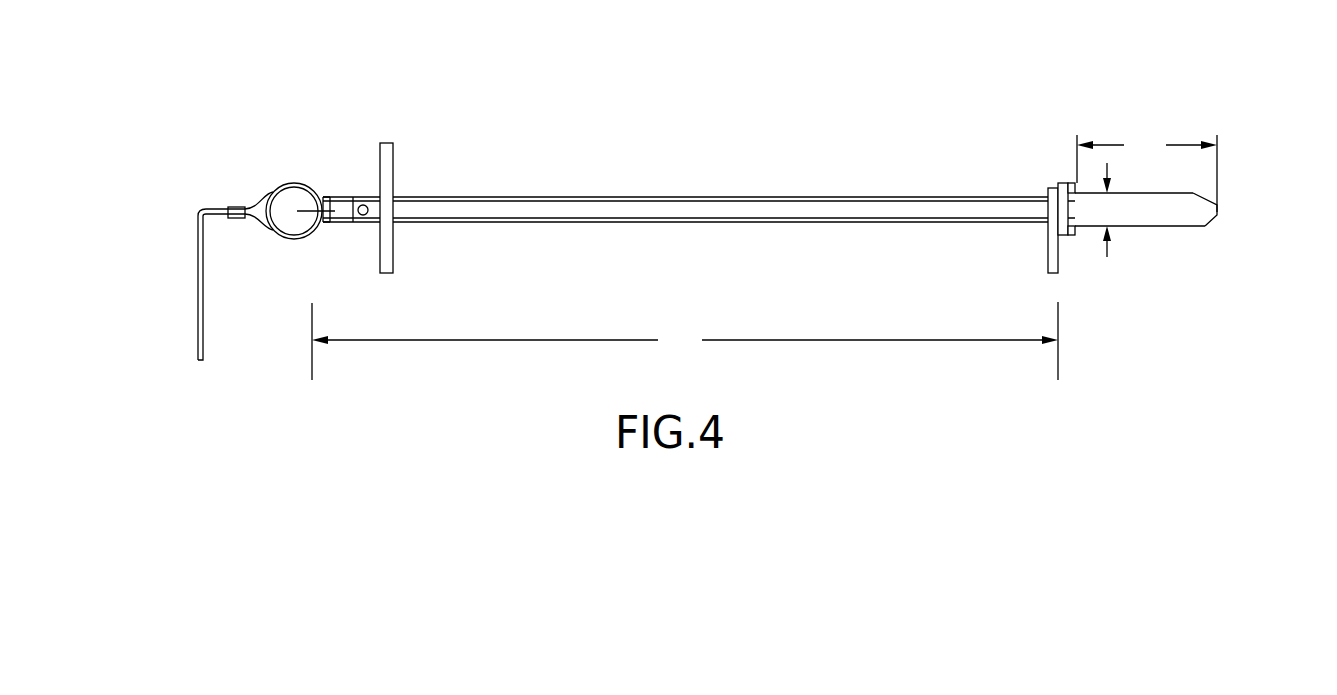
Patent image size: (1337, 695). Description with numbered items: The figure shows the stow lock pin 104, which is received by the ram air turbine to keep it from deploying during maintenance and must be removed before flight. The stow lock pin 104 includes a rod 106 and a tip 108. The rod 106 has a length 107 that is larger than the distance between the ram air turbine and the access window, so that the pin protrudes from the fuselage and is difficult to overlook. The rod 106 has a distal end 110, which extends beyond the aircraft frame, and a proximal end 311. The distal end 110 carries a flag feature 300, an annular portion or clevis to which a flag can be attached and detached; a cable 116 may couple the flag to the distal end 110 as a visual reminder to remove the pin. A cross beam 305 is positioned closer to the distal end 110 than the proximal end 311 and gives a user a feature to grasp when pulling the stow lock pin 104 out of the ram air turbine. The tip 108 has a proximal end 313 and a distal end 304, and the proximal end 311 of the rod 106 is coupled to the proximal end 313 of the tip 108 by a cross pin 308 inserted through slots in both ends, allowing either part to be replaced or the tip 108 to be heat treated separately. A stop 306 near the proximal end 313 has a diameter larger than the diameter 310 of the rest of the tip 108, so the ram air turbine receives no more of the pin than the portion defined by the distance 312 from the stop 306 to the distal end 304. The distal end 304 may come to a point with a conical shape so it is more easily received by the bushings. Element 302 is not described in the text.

The stow lock pin 104 is at (785, 100).
The rod 106 is at (669, 223).
The length 107 is at (685, 341).
The tip 108 is at (1194, 193).
The distal end 110 is at (325, 227).
The cable 116 is at (198, 241).
The flag feature 300 is at (322, 199).
The tether attachment loop 302 is at (267, 198).
The distal end 304 is at (1218, 200).
The cross beam 305 is at (394, 150).
The stop 306 is at (1069, 183).
The cross pin 308 is at (1052, 187).
The diameter 310 is at (1106, 210).
The proximal end 311 is at (1047, 233).
The distance 312 is at (1147, 171).
The proximal end 313 is at (1069, 234).